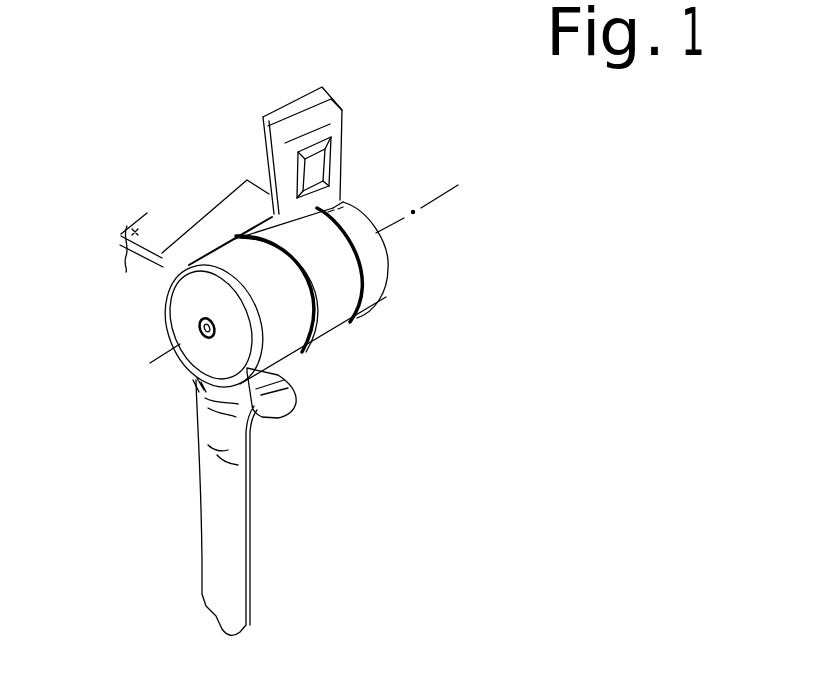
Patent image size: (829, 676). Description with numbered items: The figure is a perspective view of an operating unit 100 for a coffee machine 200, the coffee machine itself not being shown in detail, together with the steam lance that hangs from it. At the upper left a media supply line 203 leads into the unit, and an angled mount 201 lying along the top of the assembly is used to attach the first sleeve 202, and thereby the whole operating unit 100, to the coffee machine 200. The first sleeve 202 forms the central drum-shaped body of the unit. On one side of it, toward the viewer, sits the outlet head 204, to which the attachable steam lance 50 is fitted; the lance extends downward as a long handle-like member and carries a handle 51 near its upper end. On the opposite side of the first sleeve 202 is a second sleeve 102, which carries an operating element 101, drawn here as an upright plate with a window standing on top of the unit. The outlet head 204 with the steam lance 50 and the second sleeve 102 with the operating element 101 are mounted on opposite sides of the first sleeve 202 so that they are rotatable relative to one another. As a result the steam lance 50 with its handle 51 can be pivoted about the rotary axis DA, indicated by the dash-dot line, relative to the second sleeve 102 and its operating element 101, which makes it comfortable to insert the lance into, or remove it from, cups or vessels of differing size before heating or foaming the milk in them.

The operating unit 100 is at (410, 250).
The operating element 101 is at (337, 152).
The second sleeve 102 is at (372, 281).
The coffee machine 200 is at (116, 398).
The angled mount 201 is at (209, 237).
The first sleeve 202 is at (330, 307).
The media supply line 203 is at (114, 250).
The outlet head 204 is at (278, 328).
The steam lance 50 is at (224, 532).
The handle 51 is at (290, 400).
The rotary axis DA is at (453, 200).